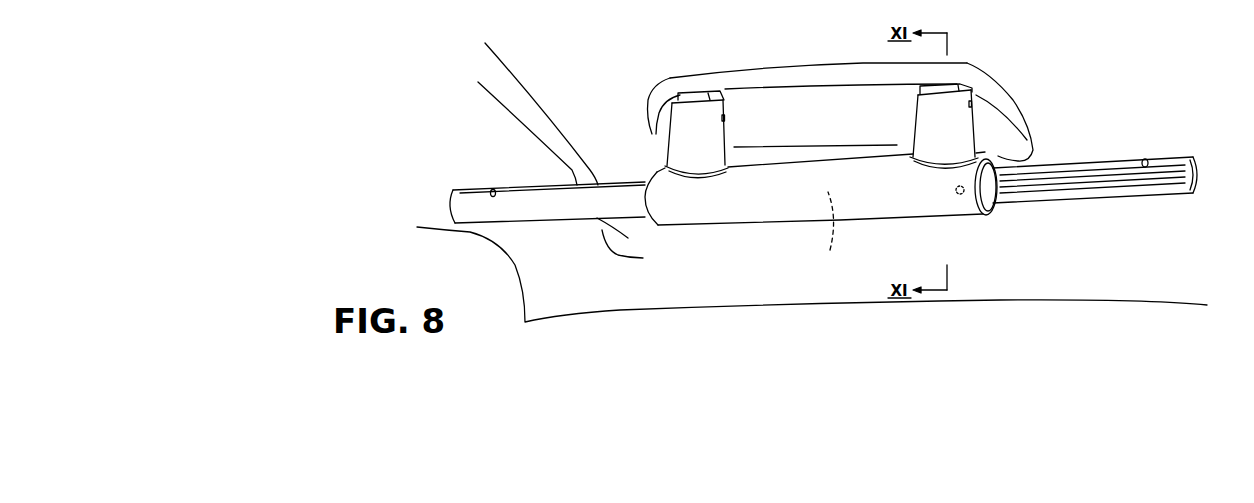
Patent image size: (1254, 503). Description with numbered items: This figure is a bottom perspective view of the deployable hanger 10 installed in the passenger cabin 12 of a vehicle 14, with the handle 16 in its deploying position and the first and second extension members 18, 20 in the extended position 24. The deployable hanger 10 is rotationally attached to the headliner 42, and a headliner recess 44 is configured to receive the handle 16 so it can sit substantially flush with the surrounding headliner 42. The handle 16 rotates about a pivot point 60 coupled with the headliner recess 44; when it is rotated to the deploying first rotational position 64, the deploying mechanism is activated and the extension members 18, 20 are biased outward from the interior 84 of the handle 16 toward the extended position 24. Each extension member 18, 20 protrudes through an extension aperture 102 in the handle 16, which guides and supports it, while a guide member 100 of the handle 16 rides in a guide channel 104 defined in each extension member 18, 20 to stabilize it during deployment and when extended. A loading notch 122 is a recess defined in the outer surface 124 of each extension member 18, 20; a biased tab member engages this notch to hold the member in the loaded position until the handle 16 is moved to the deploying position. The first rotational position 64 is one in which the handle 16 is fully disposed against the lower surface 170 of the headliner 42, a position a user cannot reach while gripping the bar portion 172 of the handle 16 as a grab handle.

The deployable hanger 10 is at (675, 66).
The passenger cabin 12 is at (456, 120).
The vehicle 14 is at (1130, 81).
The handle 16 is at (665, 155).
The first extension member 18 is at (1200, 168).
The second extension member 20 is at (500, 210).
The extended position 24 is at (743, 276).
The headliner 42 is at (656, 91).
The headliner recess 44 is at (790, 98).
The pivot point 60 is at (974, 104).
The first rotational position 64 is at (1004, 225).
The interior 84 is at (832, 233).
The guide member 100 is at (958, 194).
The extension aperture 102 is at (998, 157).
The guide channel 104 is at (1105, 177).
The loading notch 122 is at (494, 191).
The outer surface 124 is at (558, 216).
The lower surface 170 is at (770, 281).
The bar portion 172 is at (720, 205).